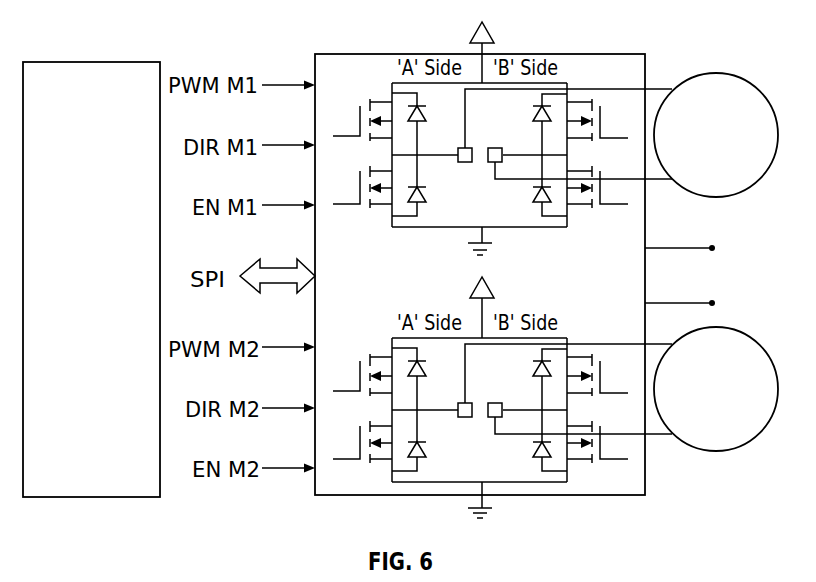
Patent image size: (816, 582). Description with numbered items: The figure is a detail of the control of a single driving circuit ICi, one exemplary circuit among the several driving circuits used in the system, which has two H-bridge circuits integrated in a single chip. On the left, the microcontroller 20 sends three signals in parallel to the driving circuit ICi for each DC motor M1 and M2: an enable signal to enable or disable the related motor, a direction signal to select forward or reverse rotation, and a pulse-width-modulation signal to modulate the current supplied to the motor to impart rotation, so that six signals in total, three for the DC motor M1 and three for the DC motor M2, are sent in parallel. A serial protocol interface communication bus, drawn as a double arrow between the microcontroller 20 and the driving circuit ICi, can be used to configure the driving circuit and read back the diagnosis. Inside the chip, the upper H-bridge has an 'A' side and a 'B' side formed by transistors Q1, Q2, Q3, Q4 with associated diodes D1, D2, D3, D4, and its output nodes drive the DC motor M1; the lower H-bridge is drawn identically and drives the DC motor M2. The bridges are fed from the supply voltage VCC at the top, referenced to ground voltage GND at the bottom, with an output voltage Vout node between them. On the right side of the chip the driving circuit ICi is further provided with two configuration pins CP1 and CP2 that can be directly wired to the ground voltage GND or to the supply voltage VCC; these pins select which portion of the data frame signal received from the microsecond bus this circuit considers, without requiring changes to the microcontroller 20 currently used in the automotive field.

The microcontroller 20 is at (92, 61).
The driving circuit ICi is at (582, 285).
The transistor Q1 is at (362, 109).
The transistor Q2 is at (362, 201).
The transistor Q3 is at (598, 116).
The transistor Q4 is at (597, 198).
The diode D1 is at (424, 124).
The diode D2 is at (424, 185).
The diode D3 is at (536, 124).
The diode D4 is at (534, 185).
The DC motor M1 is at (716, 135).
The DC motor M2 is at (716, 389).
The configuration pin CP1 is at (715, 246).
The configuration pin CP2 is at (715, 301).
The supply voltage VCC is at (489, 33).
The output voltage Vout is at (461, 285).
The ground voltage GND is at (477, 513).